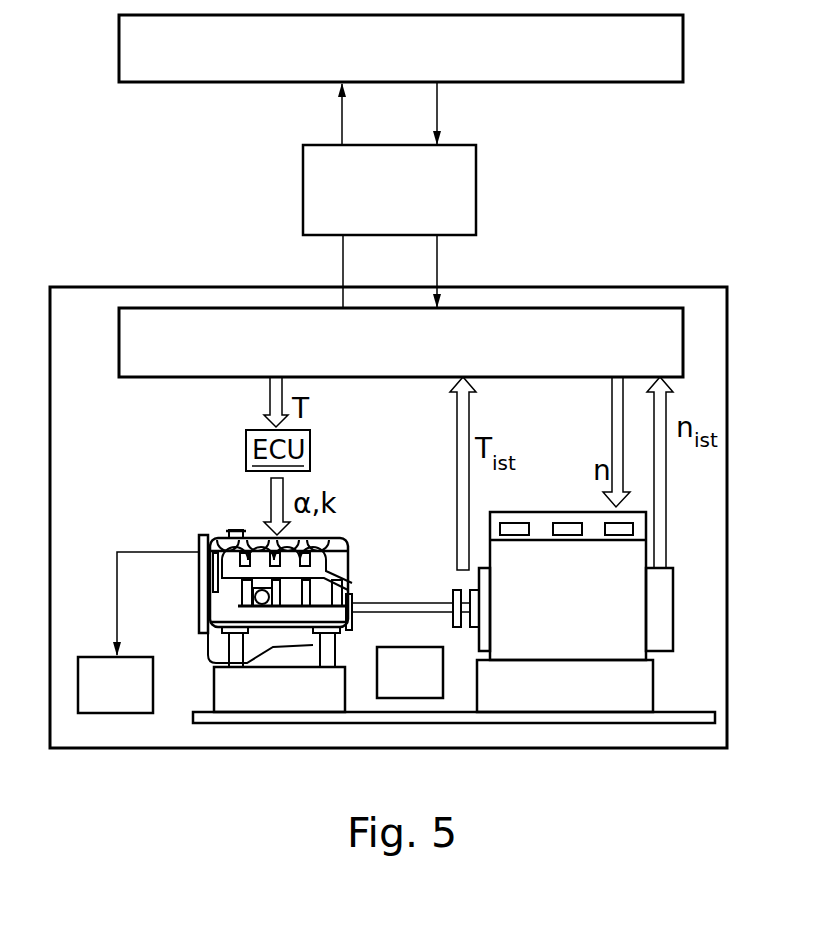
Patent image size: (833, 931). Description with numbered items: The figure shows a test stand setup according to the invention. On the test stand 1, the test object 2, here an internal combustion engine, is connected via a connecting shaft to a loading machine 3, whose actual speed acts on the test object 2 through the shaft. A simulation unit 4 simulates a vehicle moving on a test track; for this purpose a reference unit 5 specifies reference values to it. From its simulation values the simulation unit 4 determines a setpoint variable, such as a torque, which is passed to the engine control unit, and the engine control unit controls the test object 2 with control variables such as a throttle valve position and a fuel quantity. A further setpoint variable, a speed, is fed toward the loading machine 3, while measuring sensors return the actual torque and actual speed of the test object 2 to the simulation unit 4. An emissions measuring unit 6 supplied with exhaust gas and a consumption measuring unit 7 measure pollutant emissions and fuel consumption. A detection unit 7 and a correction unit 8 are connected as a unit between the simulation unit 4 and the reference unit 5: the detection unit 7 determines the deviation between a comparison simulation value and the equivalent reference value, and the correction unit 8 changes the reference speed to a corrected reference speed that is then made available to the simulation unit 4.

The test stand 1 is at (768, 254).
The test object 2 is at (206, 663).
The loading machine 3 is at (668, 655).
The simulation unit 4 is at (426, 352).
The reference unit 5 is at (417, 59).
The emissions measuring unit 6 is at (350, 587).
The detection unit 7 is at (131, 702).
The correction unit 8 is at (406, 200).